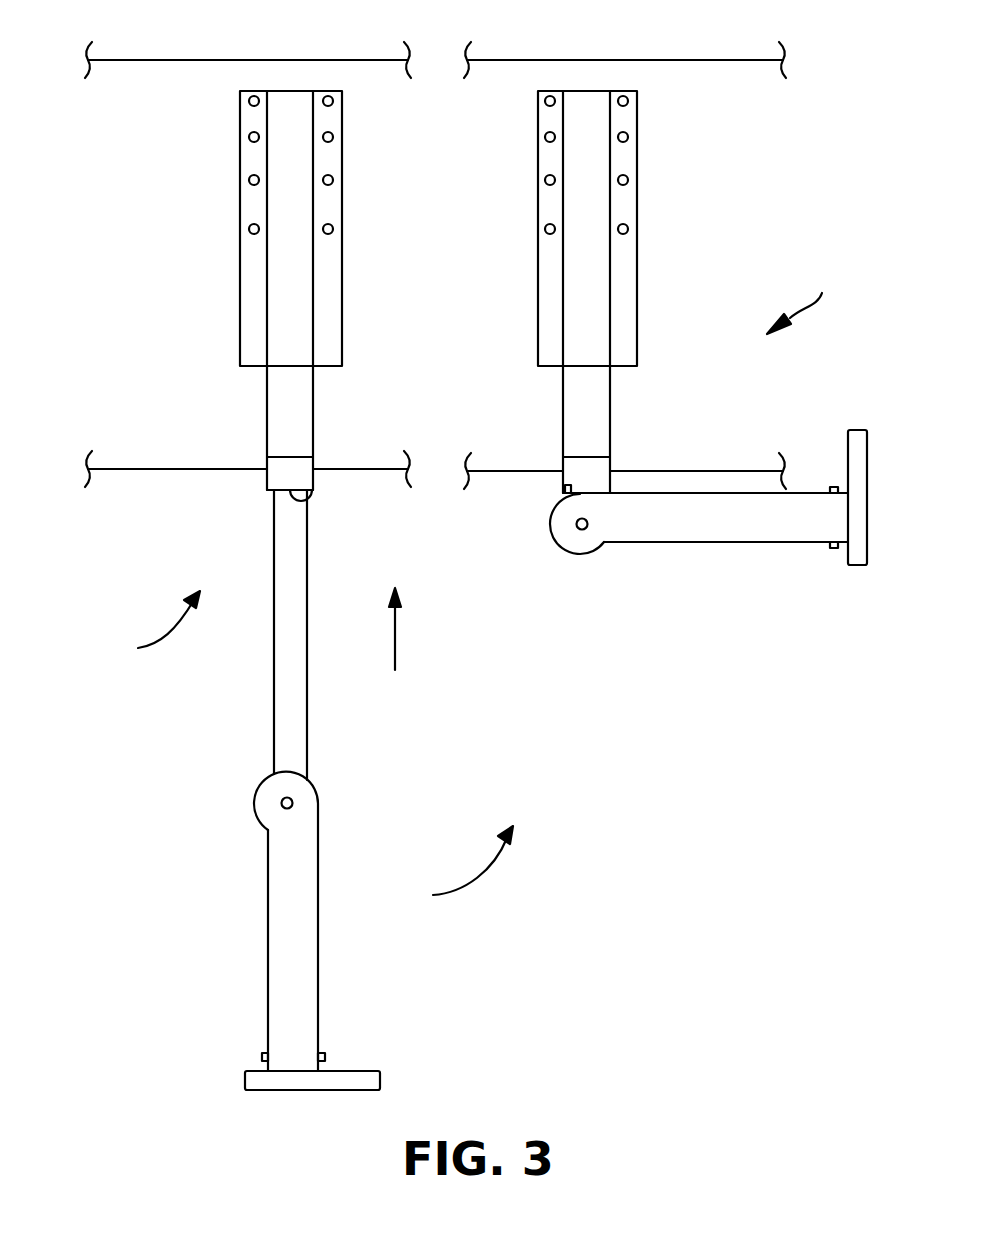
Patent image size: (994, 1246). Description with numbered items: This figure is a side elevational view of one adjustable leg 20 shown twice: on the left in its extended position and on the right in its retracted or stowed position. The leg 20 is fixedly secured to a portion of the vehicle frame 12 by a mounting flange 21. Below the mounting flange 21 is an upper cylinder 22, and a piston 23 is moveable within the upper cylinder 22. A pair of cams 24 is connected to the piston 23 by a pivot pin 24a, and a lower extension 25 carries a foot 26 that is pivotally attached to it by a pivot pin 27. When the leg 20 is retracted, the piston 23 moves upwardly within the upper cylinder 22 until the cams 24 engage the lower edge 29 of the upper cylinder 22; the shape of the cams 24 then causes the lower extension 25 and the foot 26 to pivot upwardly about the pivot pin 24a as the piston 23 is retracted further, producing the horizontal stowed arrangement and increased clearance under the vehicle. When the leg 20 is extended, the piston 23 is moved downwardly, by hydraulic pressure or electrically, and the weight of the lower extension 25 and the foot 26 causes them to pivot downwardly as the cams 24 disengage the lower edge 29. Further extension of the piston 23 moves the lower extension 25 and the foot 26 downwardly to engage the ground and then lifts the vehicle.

The vehicle frame 12 is at (157, 77).
The leg 20 is at (478, 583).
The mounting flange 21 is at (330, 156).
The upper cylinder 22 is at (290, 310).
The piston 23 is at (290, 560).
The cams 24 is at (258, 783).
The pivot pin 24a is at (292, 800).
The lower extension 25 is at (293, 898).
The foot 26 is at (355, 1076).
The pivot pin 27 is at (325, 1056).
The lower edge 29 is at (306, 498).